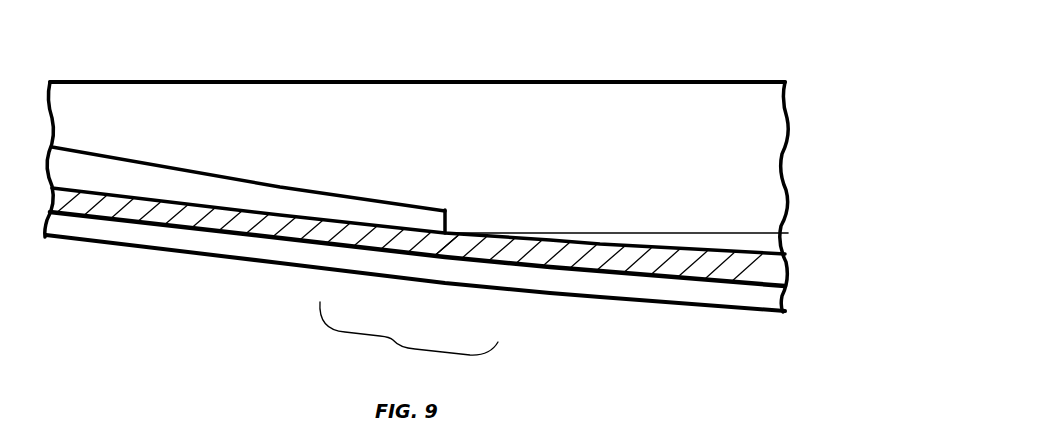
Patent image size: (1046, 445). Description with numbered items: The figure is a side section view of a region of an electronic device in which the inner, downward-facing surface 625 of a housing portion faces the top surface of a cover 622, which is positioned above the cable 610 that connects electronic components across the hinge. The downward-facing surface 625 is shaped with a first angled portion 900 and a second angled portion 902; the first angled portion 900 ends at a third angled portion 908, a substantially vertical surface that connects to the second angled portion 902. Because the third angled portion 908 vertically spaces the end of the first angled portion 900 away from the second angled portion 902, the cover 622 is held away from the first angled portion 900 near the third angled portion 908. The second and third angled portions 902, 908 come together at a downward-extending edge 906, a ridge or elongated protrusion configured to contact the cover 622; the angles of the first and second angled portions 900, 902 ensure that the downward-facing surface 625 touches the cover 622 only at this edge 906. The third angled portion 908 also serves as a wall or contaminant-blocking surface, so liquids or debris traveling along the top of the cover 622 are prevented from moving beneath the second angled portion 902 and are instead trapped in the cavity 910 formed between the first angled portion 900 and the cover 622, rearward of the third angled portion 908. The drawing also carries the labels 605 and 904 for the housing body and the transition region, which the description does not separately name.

The housing wall 605 is at (647, 100).
The downward-facing surface 625 is at (755, 233).
The first angled portion 900 is at (237, 178).
The second angled portion 902 is at (640, 235).
The transition region 904 is at (393, 340).
The downward-extending edge 906 is at (438, 228).
The third angled portion 908 is at (445, 212).
The cavity 910 is at (325, 208).
The cable 610 is at (687, 298).
The cover 622 is at (730, 285).